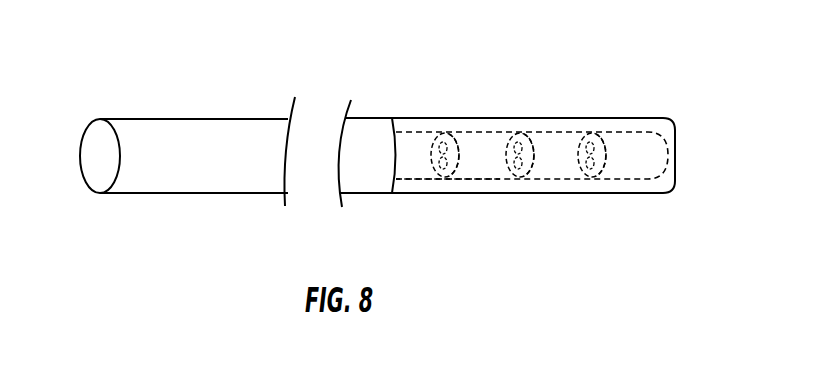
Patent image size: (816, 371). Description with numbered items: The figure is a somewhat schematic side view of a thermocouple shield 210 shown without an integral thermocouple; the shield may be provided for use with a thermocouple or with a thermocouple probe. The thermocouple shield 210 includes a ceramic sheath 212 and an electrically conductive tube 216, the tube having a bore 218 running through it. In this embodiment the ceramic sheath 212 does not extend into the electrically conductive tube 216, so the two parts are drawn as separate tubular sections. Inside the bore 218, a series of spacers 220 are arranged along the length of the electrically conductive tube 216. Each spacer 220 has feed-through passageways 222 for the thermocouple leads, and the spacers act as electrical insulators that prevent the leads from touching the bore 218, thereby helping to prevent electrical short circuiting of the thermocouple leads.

The thermocouple shield 210 is at (390, 113).
The ceramic sheath 212 is at (198, 118).
The electrically conductive tube 216 is at (453, 186).
The bore 218 is at (570, 184).
The spacer 220 is at (578, 157).
The feed-through passageway 222 is at (588, 166).